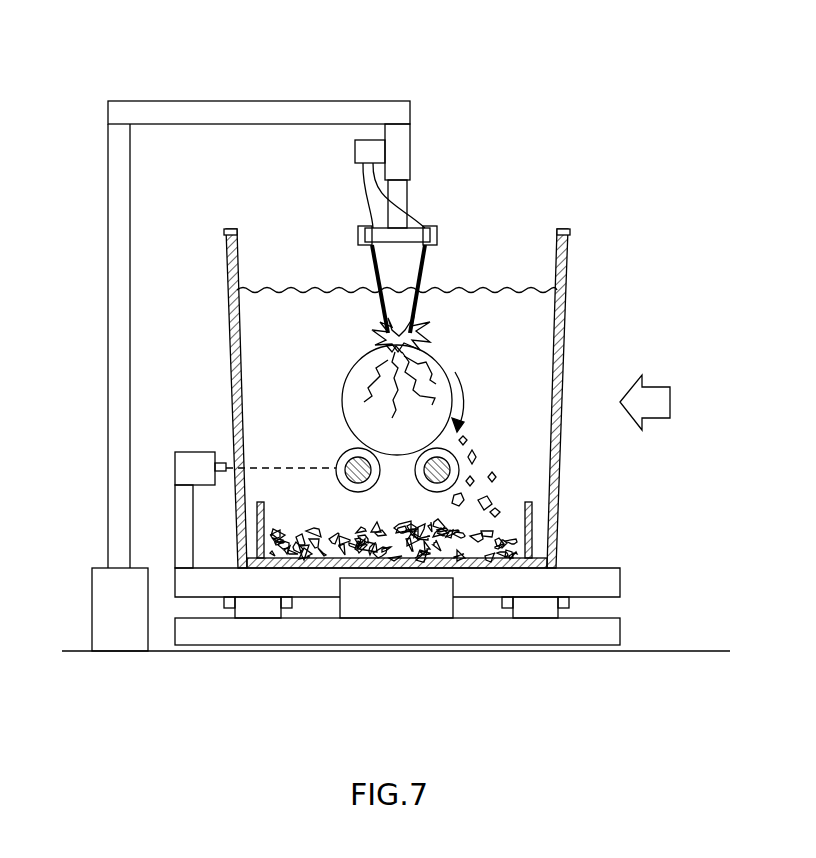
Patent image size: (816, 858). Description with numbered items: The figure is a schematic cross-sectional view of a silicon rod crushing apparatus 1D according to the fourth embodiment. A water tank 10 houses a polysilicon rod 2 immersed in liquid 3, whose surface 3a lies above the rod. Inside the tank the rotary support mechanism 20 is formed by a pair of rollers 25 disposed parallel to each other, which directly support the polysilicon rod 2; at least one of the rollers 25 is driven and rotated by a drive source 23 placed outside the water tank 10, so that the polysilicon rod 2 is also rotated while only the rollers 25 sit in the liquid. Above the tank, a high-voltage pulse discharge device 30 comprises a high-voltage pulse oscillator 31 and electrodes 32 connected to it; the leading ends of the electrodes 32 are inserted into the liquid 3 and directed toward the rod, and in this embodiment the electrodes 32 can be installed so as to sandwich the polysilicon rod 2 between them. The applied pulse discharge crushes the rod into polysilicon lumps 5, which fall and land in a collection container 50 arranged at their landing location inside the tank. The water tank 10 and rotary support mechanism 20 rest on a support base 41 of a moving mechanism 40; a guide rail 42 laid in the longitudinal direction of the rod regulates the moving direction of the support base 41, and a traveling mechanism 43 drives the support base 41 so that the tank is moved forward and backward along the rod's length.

The silicon rod crushing apparatus 1D is at (358, 28).
The polysilicon rod 2 is at (432, 368).
The liquid 3 is at (516, 358).
The liquid surface 3a is at (507, 289).
The polysilicon lumps 5 is at (495, 520).
The water tank 10 is at (558, 336).
The rotary support mechanism 20 is at (326, 438).
The drive source 23 is at (175, 466).
The rollers 25 is at (420, 487).
The high-voltage pulse discharge device 30 is at (452, 205).
The high-voltage pulse oscillator 31 is at (372, 142).
The electrodes 32 is at (378, 272).
The moving mechanism 40 is at (642, 556).
The support base 41 is at (620, 585).
The guide rail 42 is at (562, 606).
The traveling mechanism 43 is at (485, 620).
The collection containers 50 is at (533, 520).